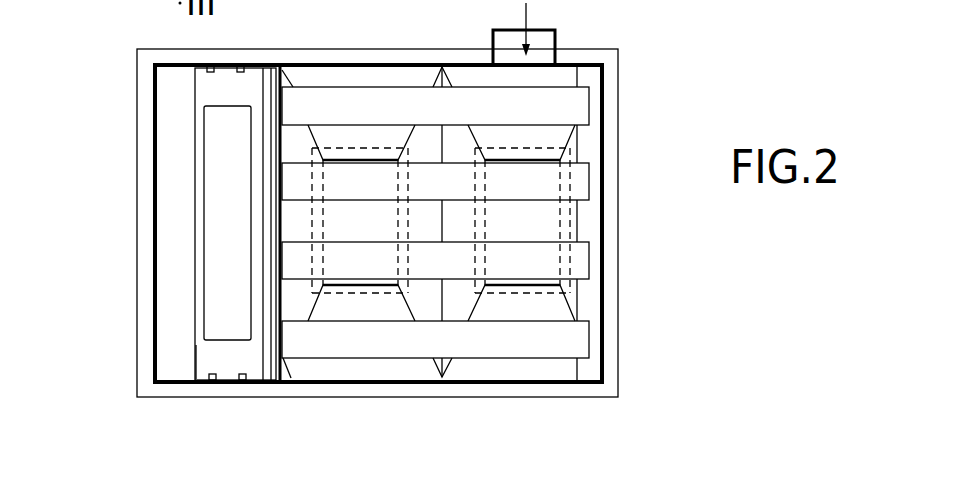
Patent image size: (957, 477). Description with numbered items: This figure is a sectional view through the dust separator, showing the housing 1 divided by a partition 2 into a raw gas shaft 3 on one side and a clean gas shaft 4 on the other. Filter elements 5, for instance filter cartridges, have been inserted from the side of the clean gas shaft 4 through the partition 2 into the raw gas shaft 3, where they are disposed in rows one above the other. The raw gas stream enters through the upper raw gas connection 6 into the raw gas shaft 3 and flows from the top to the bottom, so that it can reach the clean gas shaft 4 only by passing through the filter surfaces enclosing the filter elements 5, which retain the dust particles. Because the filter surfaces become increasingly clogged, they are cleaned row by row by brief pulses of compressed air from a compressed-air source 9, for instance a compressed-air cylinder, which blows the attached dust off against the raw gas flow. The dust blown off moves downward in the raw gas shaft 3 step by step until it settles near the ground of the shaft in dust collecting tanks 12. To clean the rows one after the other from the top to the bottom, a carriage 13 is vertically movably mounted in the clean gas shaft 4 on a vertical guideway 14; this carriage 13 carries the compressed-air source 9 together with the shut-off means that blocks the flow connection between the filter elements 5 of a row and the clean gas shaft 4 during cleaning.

The housing 1 is at (612, 294).
The partition 2 is at (280, 143).
The raw gas shaft 3 is at (587, 138).
The clean gas shaft 4 is at (178, 295).
The filter elements 5 is at (565, 108).
The raw gas connection 6 is at (543, 43).
The compressed-air source 9 is at (228, 242).
The dust collecting tanks 12 is at (345, 217).
The carriage 13 is at (207, 350).
The vertical guideway 14 is at (218, 64).